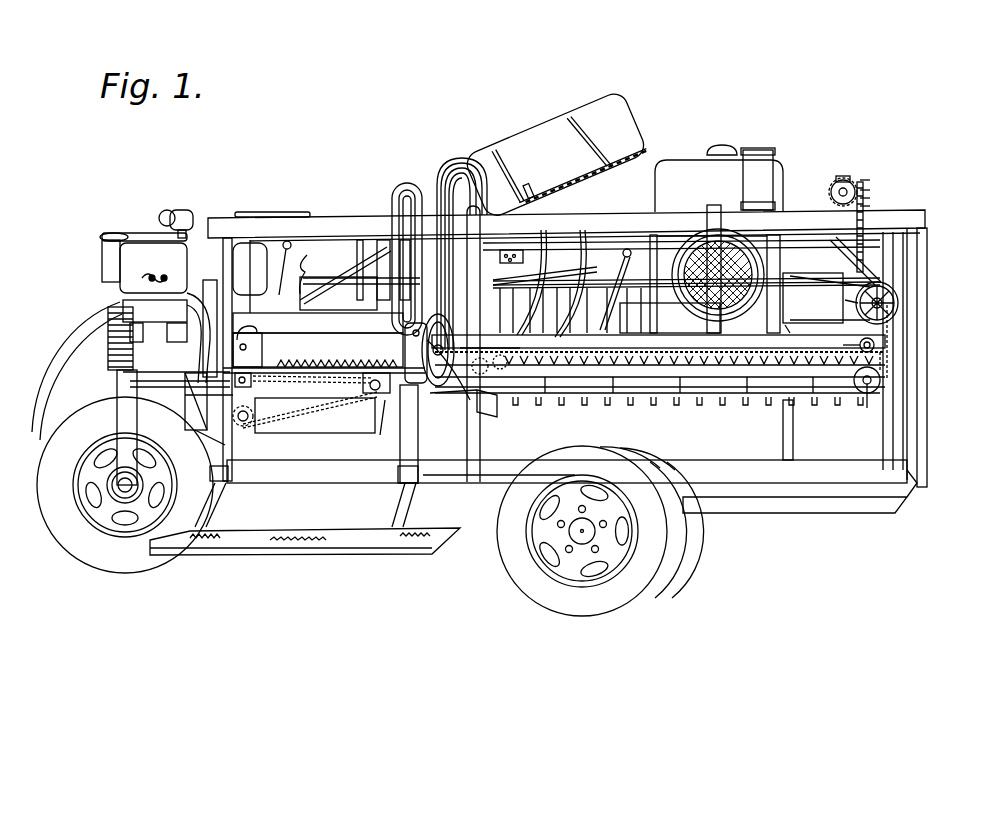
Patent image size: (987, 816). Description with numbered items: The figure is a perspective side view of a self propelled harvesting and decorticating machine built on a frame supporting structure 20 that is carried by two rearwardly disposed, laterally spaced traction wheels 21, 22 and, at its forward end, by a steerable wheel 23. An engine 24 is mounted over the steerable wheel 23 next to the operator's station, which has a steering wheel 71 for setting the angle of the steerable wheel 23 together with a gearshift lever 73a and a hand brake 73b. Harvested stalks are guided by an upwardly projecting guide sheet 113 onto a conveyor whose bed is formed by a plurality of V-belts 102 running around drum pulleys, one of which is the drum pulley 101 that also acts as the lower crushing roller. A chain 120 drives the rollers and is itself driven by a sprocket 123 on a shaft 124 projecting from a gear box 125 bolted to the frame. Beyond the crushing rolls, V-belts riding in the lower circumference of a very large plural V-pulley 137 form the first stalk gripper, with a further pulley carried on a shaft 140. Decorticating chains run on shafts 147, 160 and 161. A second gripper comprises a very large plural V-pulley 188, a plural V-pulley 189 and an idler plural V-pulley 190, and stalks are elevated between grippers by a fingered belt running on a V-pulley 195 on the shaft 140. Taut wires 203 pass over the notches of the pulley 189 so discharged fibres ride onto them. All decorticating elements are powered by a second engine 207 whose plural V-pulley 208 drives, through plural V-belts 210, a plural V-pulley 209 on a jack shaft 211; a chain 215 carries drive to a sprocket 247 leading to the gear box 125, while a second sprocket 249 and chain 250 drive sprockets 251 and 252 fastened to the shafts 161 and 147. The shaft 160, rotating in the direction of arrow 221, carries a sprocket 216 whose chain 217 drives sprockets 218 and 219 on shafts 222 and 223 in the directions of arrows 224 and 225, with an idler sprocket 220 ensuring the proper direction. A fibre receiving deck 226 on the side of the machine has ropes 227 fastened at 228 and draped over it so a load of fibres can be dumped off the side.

The frame supporting structure 20 is at (300, 492).
The traction wheel 21 is at (640, 598).
The traction wheel 22 is at (705, 538).
The steerable wheel 23 is at (107, 565).
The engine 24 is at (100, 262).
The steering wheel 71 is at (280, 212).
The gearshift lever 73a is at (289, 245).
The hand brake 73b is at (308, 258).
The drum pulley 101 is at (573, 296).
The V-belts 102 is at (610, 300).
The guide sheet 113 is at (590, 104).
The chain 120 is at (868, 205).
The sprocket 123 is at (866, 182).
The shaft 124 is at (868, 197).
The gear box 125 is at (837, 182).
The plural V-pulley 137 is at (395, 190).
The shaft 140 is at (490, 341).
The shaft 147 is at (837, 342).
The shaft 160 is at (370, 393).
The shaft 161 is at (866, 396).
The plural V-pulley 188 is at (446, 158).
The plural V-pulley 189 is at (442, 386).
The idler plural V-pulley 190 is at (500, 410).
The V-pulley 195 is at (488, 368).
The taut wires 203 is at (440, 396).
The second engine 207 is at (697, 150).
The plural V-pulley 208 is at (861, 180).
The plural V-pulley 209 is at (826, 298).
The plural V-belts 210 is at (798, 312).
The jack shaft 211 is at (858, 304).
The chain 215 is at (872, 255).
The sprocket 216 is at (382, 410).
The chain 217 is at (322, 408).
The sprocket 218 is at (240, 326).
The sprocket 219 is at (215, 412).
The idler sprocket 220 is at (245, 424).
The arrow 221 is at (345, 388).
The shaft 222 is at (247, 347).
The shaft 223 is at (233, 388).
The arrow 224 is at (255, 331).
The arrow 225 is at (252, 379).
The fibre receiving deck 226 is at (660, 331).
The ropes 227 is at (525, 310).
The rope fastening point 228 is at (658, 370).
The sprocket 247 is at (866, 191).
The second sprocket 249 is at (898, 303).
The chain 250 is at (890, 360).
The sprocket 251 is at (880, 383).
The sprocket 252 is at (875, 345).